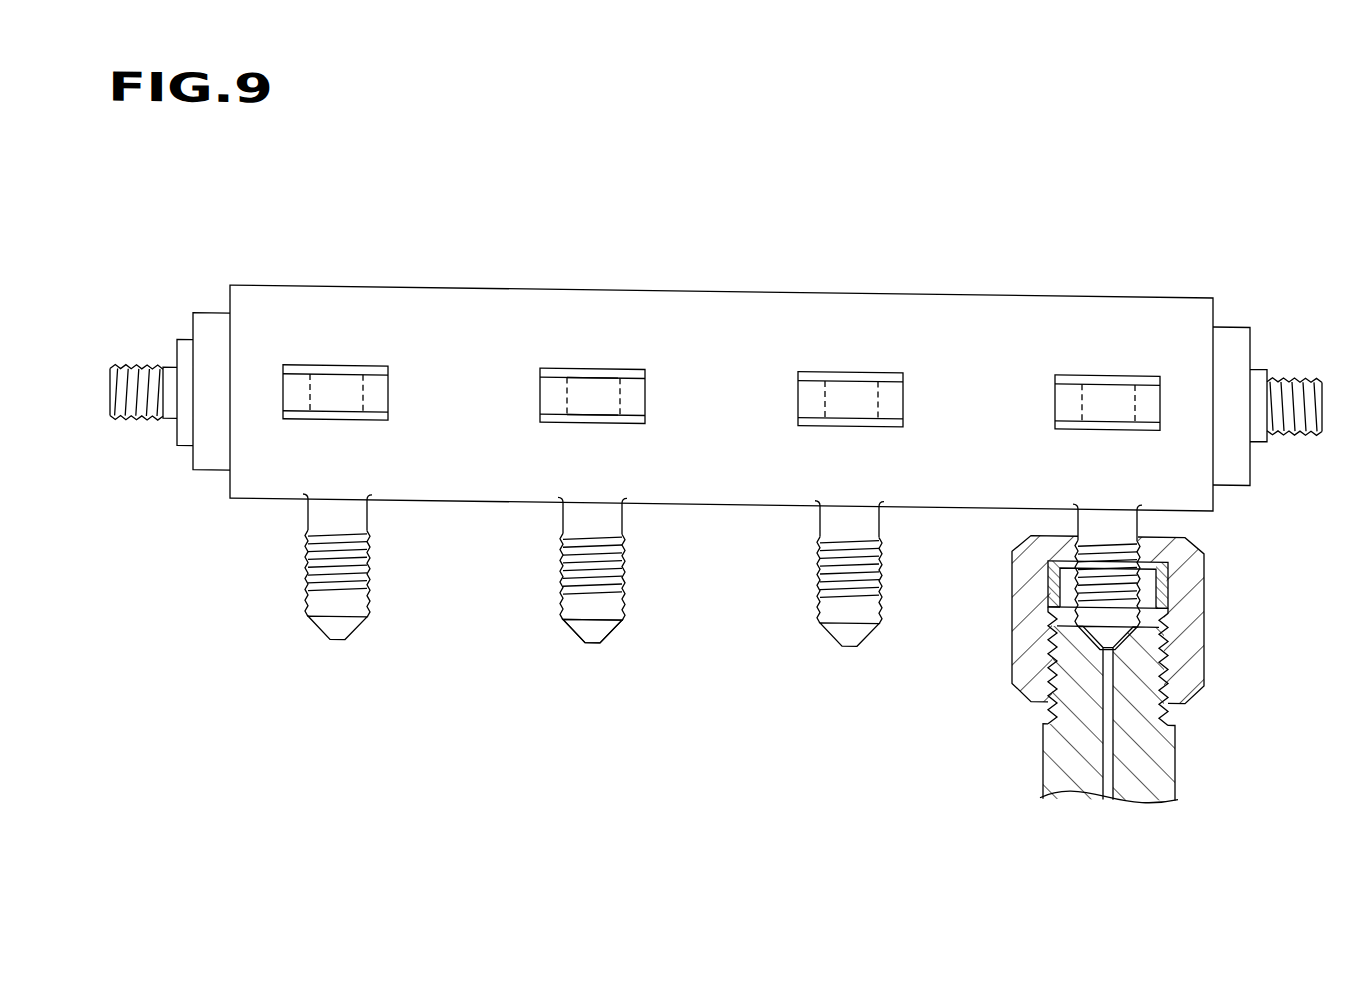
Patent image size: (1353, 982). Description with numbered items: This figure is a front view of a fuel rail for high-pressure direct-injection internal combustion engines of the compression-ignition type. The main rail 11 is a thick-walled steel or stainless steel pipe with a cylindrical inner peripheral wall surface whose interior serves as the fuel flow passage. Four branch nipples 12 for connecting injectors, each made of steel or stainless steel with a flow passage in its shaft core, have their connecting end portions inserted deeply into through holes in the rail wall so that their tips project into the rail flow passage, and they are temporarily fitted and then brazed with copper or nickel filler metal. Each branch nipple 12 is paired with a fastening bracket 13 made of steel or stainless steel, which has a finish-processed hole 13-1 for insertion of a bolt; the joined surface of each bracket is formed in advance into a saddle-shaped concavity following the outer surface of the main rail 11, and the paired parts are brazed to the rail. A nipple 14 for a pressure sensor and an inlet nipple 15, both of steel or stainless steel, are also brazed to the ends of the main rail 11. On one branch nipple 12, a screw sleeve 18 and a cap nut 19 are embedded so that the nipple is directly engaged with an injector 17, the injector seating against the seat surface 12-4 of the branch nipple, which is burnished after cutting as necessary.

The main rail 11 is at (482, 301).
The branch nipple for connecting injectors 12 is at (563, 573).
The seat surface 12-4 is at (580, 620).
The fastening bracket 13 is at (340, 360).
The finish-processed hole 13-1 is at (617, 385).
The nipple for a pressure sensor 14 is at (1302, 363).
The inlet nipple 15 is at (132, 365).
The injector 17 is at (1165, 742).
The screw sleeve 18 is at (1162, 550).
The cap nut 19 is at (1195, 657).